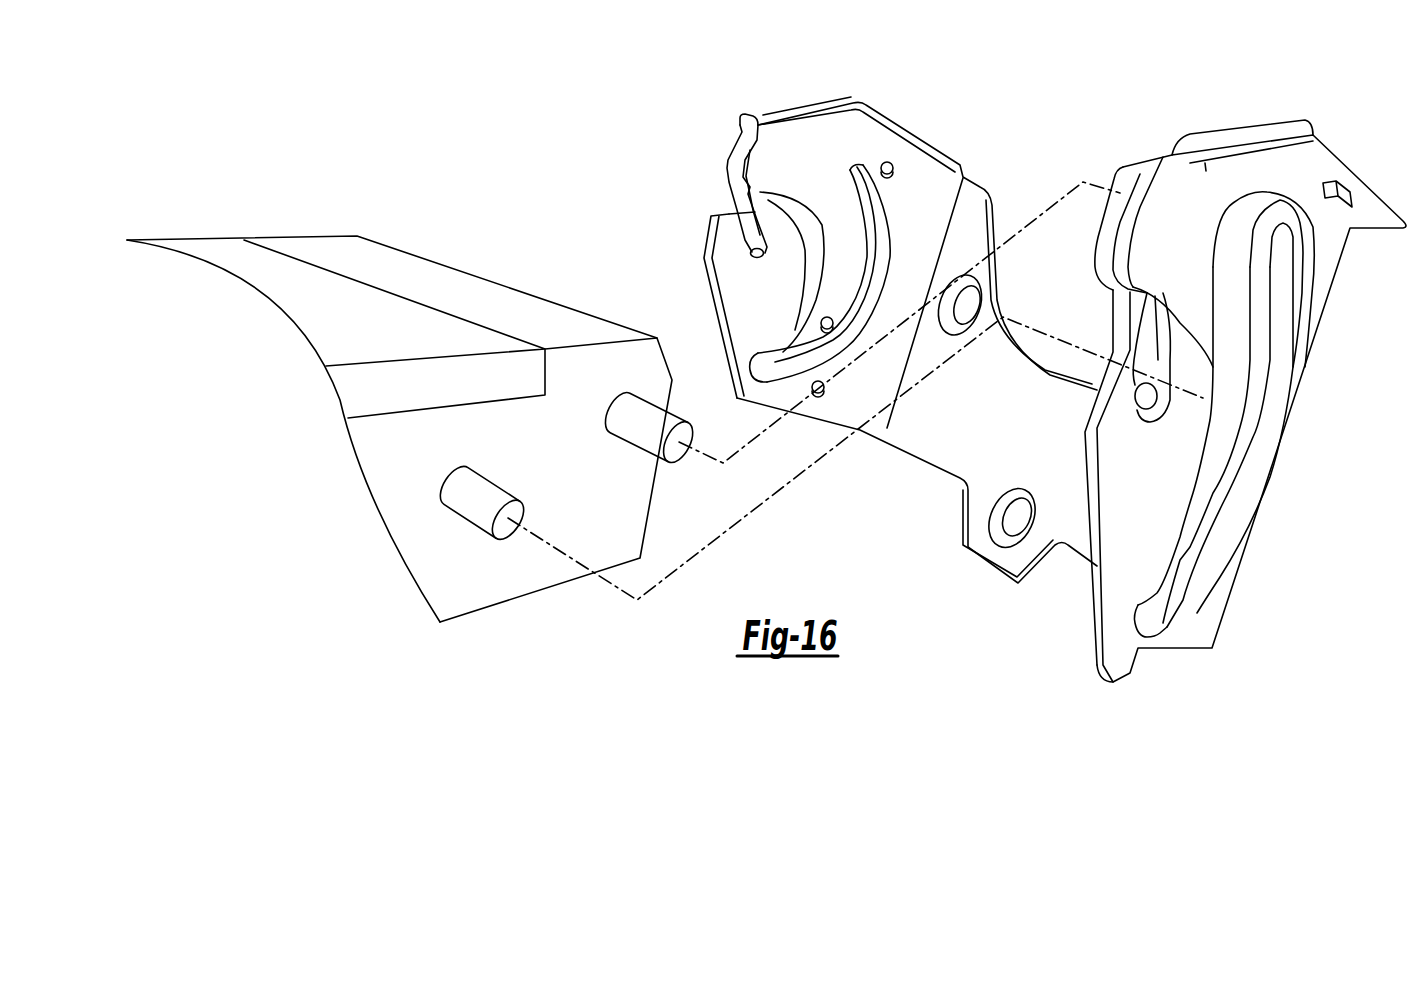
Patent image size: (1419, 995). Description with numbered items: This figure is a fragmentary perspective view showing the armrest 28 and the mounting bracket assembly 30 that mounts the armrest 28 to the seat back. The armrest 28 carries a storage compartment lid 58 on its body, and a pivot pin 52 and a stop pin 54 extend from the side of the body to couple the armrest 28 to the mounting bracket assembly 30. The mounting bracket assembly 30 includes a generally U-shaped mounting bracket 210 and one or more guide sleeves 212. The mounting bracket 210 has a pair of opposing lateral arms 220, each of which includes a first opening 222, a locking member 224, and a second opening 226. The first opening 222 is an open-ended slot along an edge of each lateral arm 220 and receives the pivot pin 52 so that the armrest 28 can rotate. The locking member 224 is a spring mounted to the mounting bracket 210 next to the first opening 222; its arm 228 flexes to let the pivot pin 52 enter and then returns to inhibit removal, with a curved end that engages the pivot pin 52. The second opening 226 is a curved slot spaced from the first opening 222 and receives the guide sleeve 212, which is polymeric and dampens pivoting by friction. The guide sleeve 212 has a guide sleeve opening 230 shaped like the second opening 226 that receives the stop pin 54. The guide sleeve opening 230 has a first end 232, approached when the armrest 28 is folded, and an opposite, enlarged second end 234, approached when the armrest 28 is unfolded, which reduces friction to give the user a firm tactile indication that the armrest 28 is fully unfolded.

The armrest 28 is at (399, 390).
The mounting bracket assembly 30 is at (994, 354).
The pivot pin 52 is at (818, 458).
The stop pin 54 is at (846, 330).
The storage compartment lid 58 is at (450, 303).
The mounting bracket 210 is at (913, 340).
The guide sleeve 212 is at (1064, 396).
The lateral arm 220 is at (888, 448).
The first opening 222 is at (905, 268).
The locking member 224 is at (948, 158).
The second opening 226 is at (847, 268).
The arm 228 is at (954, 366).
The guide sleeve opening 230 is at (1246, 398).
The first end 232 is at (1227, 587).
The second end 234 is at (1248, 284).